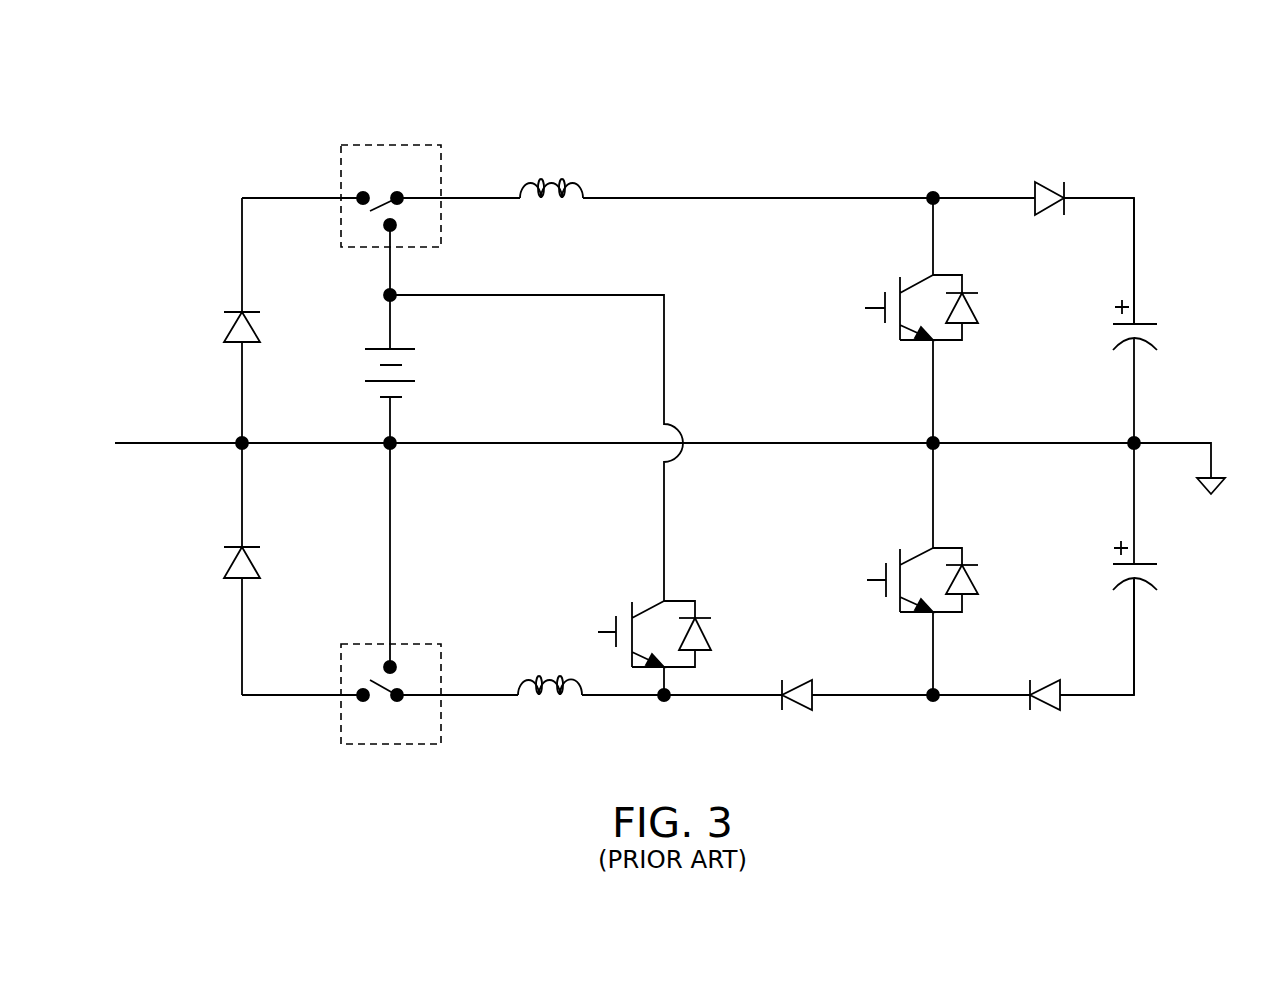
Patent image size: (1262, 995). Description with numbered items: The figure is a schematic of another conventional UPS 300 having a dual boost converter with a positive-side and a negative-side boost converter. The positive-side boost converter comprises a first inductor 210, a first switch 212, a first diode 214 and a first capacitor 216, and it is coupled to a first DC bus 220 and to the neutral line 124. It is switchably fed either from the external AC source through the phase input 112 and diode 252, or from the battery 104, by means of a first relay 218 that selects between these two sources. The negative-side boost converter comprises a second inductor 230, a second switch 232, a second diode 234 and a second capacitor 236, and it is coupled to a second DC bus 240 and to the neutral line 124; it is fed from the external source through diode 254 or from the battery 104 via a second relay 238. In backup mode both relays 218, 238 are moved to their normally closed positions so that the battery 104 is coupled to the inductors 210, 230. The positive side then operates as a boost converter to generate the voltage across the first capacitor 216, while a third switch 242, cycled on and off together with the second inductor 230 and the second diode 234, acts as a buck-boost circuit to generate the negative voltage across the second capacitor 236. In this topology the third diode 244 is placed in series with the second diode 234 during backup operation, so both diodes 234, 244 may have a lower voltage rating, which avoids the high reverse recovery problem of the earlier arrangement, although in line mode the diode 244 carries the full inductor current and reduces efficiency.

The UPS 300 is at (832, 126).
The first relay 218 is at (403, 144).
The first inductor 210 is at (570, 170).
The first diode 214 is at (1066, 186).
The first DC bus 220 is at (1137, 222).
The first capacitor 216 is at (1158, 340).
The first switch 212 is at (900, 281).
The diode 252 is at (242, 311).
The battery 104 is at (407, 347).
The phase input 112 is at (178, 444).
The neutral line 124 is at (497, 443).
The diode 254 is at (234, 580).
The third switch 242 is at (632, 600).
The second switch 232 is at (897, 608).
The second inductor 230 is at (561, 698).
The third diode 244 is at (782, 712).
The second diode 234 is at (1030, 712).
The second capacitor 236 is at (1158, 584).
The second DC bus 240 is at (1137, 665).
The second relay 238 is at (386, 746).